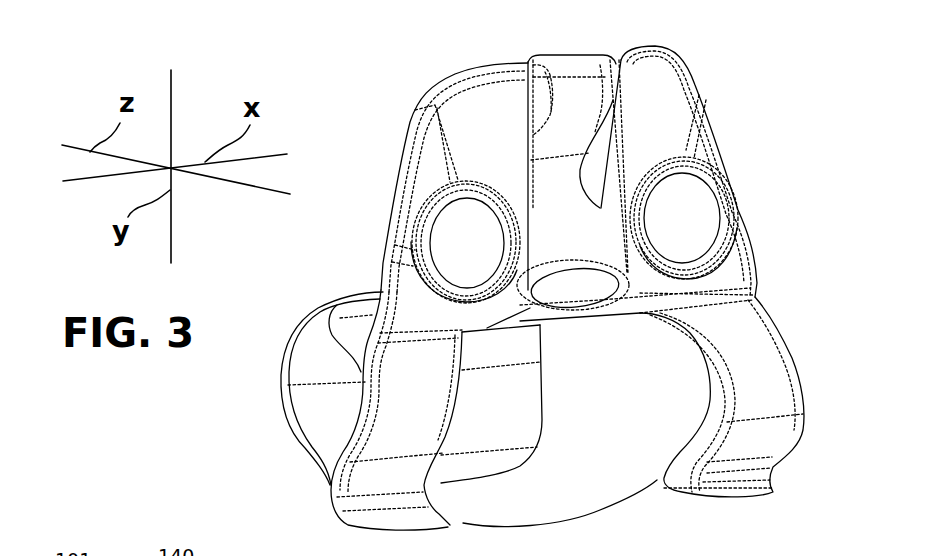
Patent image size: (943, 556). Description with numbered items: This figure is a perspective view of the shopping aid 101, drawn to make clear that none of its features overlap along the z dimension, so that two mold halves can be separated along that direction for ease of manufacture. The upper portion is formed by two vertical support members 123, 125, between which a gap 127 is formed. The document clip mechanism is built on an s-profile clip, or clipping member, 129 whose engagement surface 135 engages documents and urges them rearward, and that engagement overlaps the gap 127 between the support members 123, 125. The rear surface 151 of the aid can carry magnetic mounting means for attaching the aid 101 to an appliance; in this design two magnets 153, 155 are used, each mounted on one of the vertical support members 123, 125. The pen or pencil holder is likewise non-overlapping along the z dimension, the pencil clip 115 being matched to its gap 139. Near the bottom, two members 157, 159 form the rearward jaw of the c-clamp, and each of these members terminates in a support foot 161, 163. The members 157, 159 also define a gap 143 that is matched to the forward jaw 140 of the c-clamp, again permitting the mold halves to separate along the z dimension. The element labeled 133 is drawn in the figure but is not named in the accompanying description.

The shopping aid 101 is at (360, 98).
The pencil clip 115 is at (570, 278).
The vertical support member 123 is at (702, 100).
The vertical support member 125 is at (437, 87).
The gap 127 is at (530, 212).
The s-profile clip 129 is at (547, 117).
The top surface 133 is at (593, 62).
The engagement surface 135 is at (568, 100).
The matched gap 139 is at (563, 273).
The forward jaw 140 is at (294, 421).
The gap 143 is at (565, 526).
The rear surface 151 is at (693, 147).
The magnet 153 is at (685, 223).
The magnet 155 is at (478, 262).
The rearward jaw member 157 is at (390, 453).
The rearward jaw member 159 is at (760, 400).
The support foot 161 is at (393, 516).
The support foot 163 is at (763, 487).